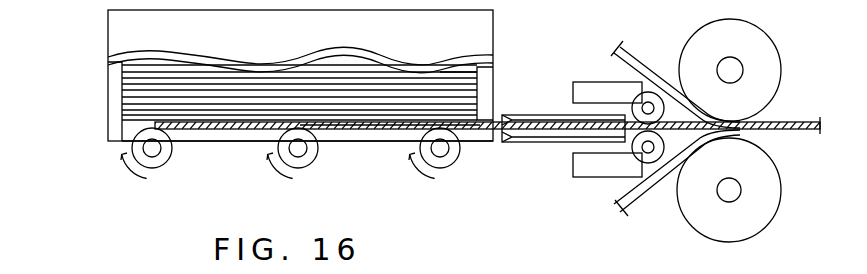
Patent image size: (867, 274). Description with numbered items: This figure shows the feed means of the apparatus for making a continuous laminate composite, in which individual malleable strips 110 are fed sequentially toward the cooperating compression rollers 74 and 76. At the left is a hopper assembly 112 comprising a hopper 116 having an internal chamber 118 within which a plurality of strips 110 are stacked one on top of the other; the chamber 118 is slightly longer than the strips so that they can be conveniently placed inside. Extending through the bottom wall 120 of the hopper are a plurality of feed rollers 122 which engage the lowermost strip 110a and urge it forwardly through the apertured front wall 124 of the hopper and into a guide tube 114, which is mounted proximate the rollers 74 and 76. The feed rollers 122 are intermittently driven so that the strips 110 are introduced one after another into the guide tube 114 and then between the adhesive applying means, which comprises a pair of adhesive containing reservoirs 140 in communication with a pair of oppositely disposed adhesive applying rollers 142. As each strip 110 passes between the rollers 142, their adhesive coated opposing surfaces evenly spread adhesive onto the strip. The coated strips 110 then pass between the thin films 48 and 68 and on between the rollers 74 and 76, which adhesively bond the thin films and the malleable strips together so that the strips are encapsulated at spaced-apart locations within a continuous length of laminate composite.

The hopper assembly 112 is at (104, 31).
The hopper 116 is at (115, 89).
The apertured front wall 124 is at (488, 78).
The malleable strips 110 is at (313, 93).
The internal chamber 118 is at (463, 80).
The bottom wall 120 is at (223, 132).
The feed rollers 122 is at (161, 162).
The lowermost strip 110a is at (378, 131).
The guide tube 114 is at (545, 137).
The adhesive containing reservoirs 140 is at (586, 90).
The adhesive applying rollers 142 is at (662, 108).
The thin film 48 is at (640, 62).
The thin film 68 is at (645, 208).
The compression roller 74 is at (782, 62).
The compression roller 76 is at (770, 215).